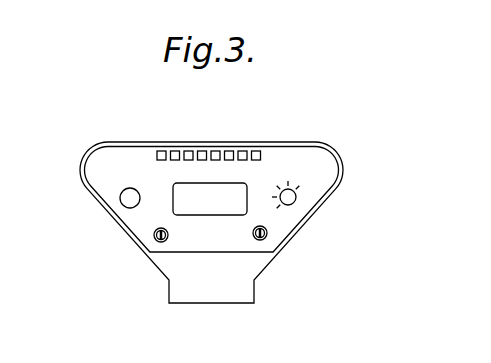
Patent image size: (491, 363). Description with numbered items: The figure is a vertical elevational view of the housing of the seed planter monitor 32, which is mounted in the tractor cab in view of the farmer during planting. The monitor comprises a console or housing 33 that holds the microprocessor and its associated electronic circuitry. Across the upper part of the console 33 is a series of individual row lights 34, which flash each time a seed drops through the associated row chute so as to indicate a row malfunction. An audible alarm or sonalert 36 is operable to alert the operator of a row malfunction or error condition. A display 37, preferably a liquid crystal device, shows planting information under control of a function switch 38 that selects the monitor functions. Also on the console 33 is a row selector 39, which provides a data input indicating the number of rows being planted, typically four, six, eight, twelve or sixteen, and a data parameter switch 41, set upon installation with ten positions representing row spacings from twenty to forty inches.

The seed planter monitor 32 is at (241, 143).
The console or housing 33 is at (107, 220).
The row lights 34 is at (160, 152).
The audible alarm or sonalert 36 is at (120, 197).
The display 37 is at (249, 189).
The function switch 38 is at (296, 198).
The row selector 39 is at (159, 242).
The data parameter switch 41 is at (266, 239).